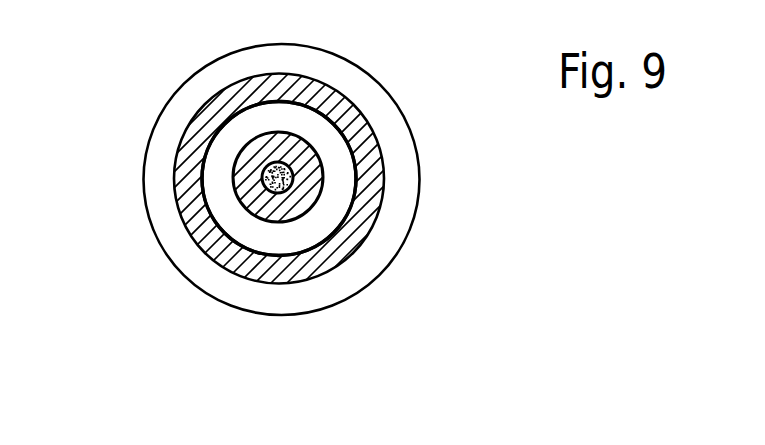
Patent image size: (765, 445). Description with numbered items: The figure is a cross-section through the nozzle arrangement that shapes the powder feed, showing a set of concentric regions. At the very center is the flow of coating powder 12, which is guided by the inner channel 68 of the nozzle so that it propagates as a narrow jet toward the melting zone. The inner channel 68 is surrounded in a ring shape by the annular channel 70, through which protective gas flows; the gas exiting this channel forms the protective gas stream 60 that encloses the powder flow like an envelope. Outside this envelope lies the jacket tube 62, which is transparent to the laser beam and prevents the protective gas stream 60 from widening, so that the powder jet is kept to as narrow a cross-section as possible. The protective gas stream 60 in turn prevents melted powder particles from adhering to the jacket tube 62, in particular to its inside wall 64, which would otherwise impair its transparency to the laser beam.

The protective gas stream 60 is at (171, 128).
The jacket tube 62 is at (162, 205).
The inside wall 64 is at (204, 254).
The annular channel 70 is at (315, 226).
The inner channel 68 is at (293, 156).
The coating powder 12 is at (286, 176).